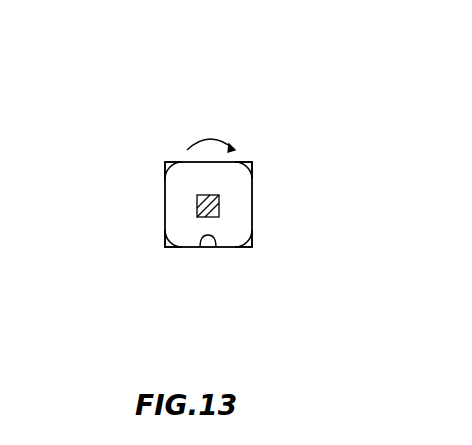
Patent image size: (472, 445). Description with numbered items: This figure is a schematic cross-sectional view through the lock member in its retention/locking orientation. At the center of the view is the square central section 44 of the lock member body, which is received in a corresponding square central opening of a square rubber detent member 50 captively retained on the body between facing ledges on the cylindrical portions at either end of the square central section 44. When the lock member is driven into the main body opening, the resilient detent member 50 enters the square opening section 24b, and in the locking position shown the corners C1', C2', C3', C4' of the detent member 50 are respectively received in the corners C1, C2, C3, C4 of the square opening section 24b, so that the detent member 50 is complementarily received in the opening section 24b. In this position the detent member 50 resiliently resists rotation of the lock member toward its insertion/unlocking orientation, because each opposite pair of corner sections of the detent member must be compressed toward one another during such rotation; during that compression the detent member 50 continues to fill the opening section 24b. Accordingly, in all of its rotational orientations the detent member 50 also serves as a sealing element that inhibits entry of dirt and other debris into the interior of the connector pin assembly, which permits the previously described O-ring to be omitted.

The detent member 50 is at (233, 207).
The square central section 44 is at (197, 205).
The opening section 24b is at (200, 247).
The corner C1 is at (140, 143).
The corner C1' is at (130, 163).
The corner C2 is at (275, 250).
The corner C2' is at (259, 272).
The corner C3 is at (140, 258).
The corner C3' is at (147, 278).
The corner C4 is at (222, 135).
The corner C4' is at (275, 175).